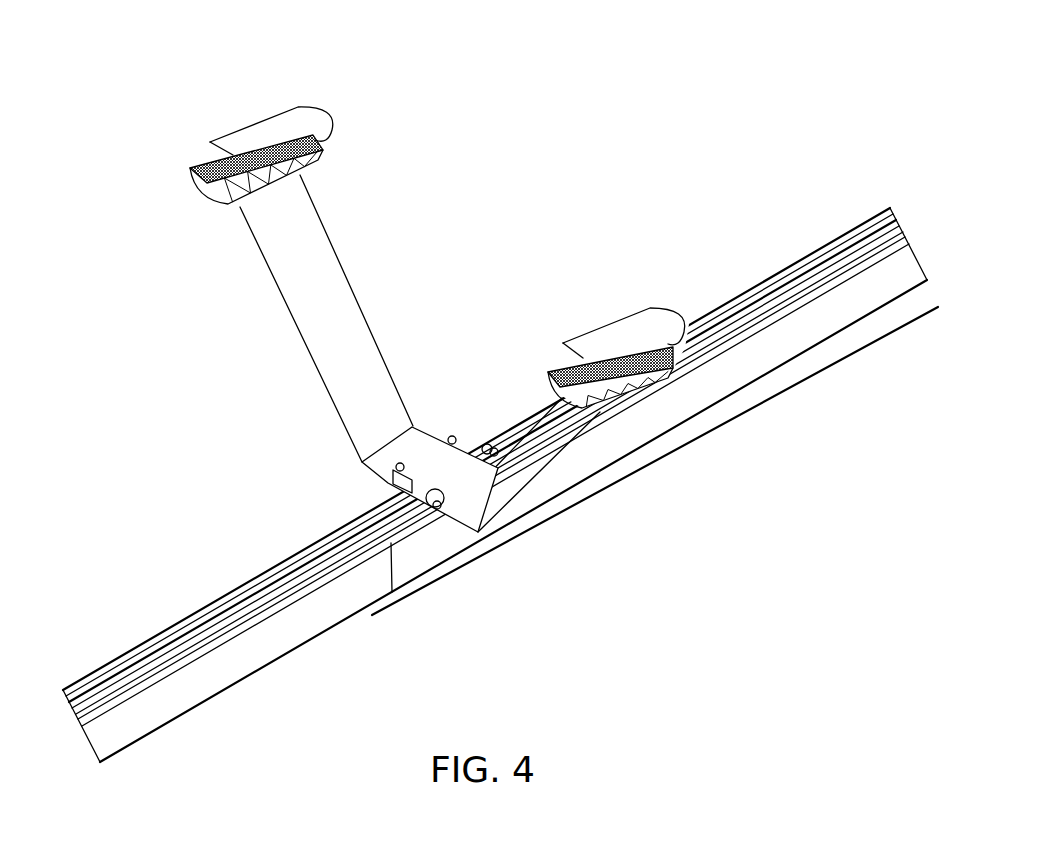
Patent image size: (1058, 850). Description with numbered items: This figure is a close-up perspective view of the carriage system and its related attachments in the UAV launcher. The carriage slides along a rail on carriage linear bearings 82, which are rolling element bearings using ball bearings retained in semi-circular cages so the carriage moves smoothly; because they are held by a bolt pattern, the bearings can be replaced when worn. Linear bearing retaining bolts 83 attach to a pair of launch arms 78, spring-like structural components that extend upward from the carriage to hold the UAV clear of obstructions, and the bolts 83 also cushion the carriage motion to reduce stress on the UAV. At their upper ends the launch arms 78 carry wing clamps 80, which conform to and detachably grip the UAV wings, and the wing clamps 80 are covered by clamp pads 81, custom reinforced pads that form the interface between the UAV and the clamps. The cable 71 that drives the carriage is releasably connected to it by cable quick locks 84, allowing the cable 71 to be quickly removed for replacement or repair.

The cable 71 is at (222, 597).
The launch arms 78 is at (290, 325).
The wing clamps 80 is at (272, 107).
The clamp pads 81 is at (193, 170).
The carriage linear bearings 82 is at (447, 527).
The linear bearing retaining bolts 83 is at (452, 436).
The cable quick locks 84 is at (483, 435).